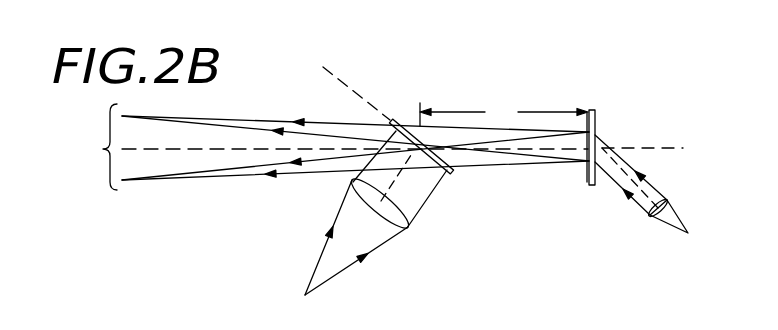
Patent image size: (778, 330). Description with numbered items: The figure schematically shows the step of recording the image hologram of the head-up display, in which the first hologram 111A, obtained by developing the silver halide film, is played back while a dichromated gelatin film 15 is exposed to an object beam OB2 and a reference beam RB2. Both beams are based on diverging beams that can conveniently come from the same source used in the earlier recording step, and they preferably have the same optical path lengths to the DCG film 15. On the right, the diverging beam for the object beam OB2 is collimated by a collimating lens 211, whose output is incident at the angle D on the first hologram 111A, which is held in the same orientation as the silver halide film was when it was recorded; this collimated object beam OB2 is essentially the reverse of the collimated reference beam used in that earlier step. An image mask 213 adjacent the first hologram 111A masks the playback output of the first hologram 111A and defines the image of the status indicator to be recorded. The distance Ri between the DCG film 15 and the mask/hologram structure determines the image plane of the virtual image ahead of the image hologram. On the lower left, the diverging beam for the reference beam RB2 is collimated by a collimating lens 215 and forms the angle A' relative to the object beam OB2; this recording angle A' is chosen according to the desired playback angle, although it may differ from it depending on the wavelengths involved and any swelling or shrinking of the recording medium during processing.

The collimating lens 215 is at (352, 181).
The dichromated gelatin film 15 is at (452, 174).
The image mask 213 is at (587, 125).
The collimating lens 211 is at (650, 218).
The first hologram 111A is at (595, 187).
The distance Ri is at (504, 114).
The angle D is at (613, 148).
The angle A' is at (439, 184).
The object beam OB2 is at (503, 167).
The reference beam RB2 is at (418, 213).